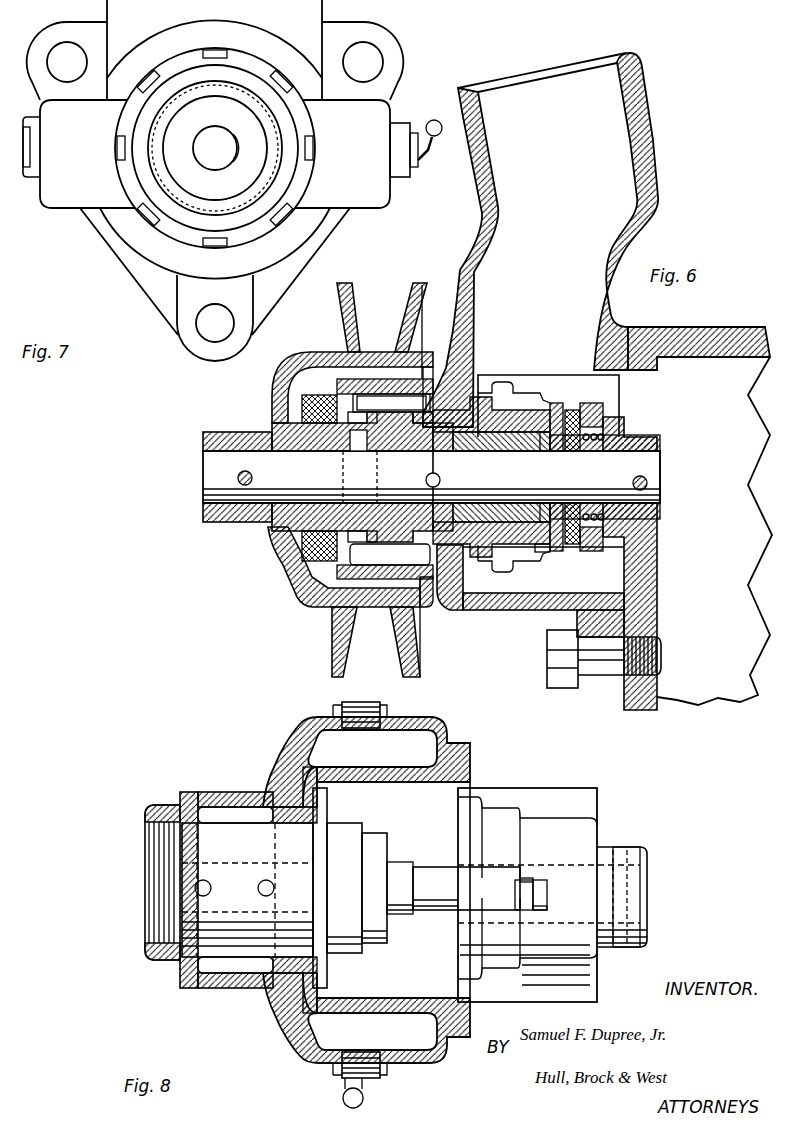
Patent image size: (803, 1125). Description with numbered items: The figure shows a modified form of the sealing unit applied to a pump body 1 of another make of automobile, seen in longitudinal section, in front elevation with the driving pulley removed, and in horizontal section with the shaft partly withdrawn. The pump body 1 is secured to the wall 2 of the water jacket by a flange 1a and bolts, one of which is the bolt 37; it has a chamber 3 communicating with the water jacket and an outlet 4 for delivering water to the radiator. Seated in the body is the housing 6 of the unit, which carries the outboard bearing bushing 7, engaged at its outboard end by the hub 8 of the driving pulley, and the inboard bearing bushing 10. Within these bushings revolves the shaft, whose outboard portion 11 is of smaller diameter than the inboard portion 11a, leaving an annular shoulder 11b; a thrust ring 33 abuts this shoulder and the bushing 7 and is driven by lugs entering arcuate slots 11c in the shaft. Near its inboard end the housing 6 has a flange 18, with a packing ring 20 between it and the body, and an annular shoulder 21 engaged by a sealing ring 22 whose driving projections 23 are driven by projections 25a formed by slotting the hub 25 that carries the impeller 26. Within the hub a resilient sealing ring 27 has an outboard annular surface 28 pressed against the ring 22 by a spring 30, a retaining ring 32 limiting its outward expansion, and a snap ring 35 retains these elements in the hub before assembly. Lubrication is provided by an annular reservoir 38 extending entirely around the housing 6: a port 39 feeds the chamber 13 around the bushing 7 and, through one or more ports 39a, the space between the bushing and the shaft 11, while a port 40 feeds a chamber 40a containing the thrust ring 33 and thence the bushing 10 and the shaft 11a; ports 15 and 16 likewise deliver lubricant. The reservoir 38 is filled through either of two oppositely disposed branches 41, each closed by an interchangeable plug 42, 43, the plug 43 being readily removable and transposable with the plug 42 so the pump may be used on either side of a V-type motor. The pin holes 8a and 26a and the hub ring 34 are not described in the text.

In FIG. 7, the pump body 1 is at (295, 230).
In FIG. 6, the flange 1a is at (600, 690).
In FIG. 8, the flange 1a is at (214, 792).
In FIG. 6, the wall of liquid containing chamber 2 is at (712, 327).
In FIG. 6, the chamber 3 is at (622, 560).
In FIG. 8, the chamber 3 is at (393, 890).
In FIG. 6, the outlet 4 is at (540, 240).
In FIG. 7, the housing 6 is at (190, 210).
In FIG. 6, the housing 6 is at (410, 545).
In FIG. 8, the housing 6 is at (212, 825).
In FIG. 7, the outboard bearing bushing 7 is at (177, 168).
In FIG. 6, the outboard bearing bushing 7 is at (290, 522).
In FIG. 6, the hub 8 is at (248, 432).
In FIG. 6, the pin hole 8a is at (238, 478).
In FIG. 6, the bearing bushing 10 is at (578, 477).
In FIG. 7, the shaft 11 is at (221, 158).
In FIG. 6, the shaft 11 is at (225, 505).
In FIG. 8, the shaft 11 is at (393, 862).
In FIG. 6, the inboard shaft portion 11a is at (652, 466).
In FIG. 8, the inboard shaft portion 11a is at (440, 915).
In FIG. 6, the annular shoulder 11b is at (437, 468).
In FIG. 8, the annular shoulder 11b is at (418, 896).
In FIG. 6, the arcuate slots 11c is at (443, 480).
In FIG. 6, the annular chamber 13 is at (385, 555).
In FIG. 8, the port 15 is at (206, 880).
In FIG. 8, the port 16 is at (264, 880).
In FIG. 6, the flange 18 is at (486, 393).
In FIG. 8, the flange 18 is at (327, 822).
In FIG. 6, the packing ring 20 is at (458, 602).
In FIG. 8, the packing ring 20 is at (313, 851).
In FIG. 6, the annular shoulder 21 is at (542, 455).
In FIG. 6, the sealing ring 22 is at (556, 450).
In FIG. 6, the driving projections 23 is at (562, 405).
In FIG. 8, the driving projections 23 is at (530, 878).
In FIG. 6, the hub 25 is at (605, 560).
In FIG. 8, the hub 25 is at (572, 958).
In FIG. 6, the projections 25a is at (510, 390).
In FIG. 8, the projections 25a is at (468, 861).
In FIG. 6, the rotor or impeller 26 is at (555, 375).
In FIG. 8, the rotor or impeller 26 is at (553, 790).
In FIG. 6, the pin hole 26a is at (650, 484).
In FIG. 8, the pin hole 26a is at (630, 850).
In FIG. 6, the sealing ring 27 is at (522, 477).
In FIG. 8, the outboard annular surface 28 is at (547, 889).
In FIG. 6, the spring 30 is at (592, 410).
In FIG. 6, the retaining ring 32 is at (572, 410).
In FIG. 8, the retaining ring 32 is at (547, 909).
In FIG. 6, the thrust ring 33 is at (427, 440).
In FIG. 7, the pulley hub ring 34 is at (250, 65).
In FIG. 6, the pulley hub ring 34 is at (313, 375).
In FIG. 8, the pulley hub ring 34 is at (145, 812).
In FIG. 6, the snap ring 35 is at (541, 553).
In FIG. 8, the snap ring 35 is at (515, 898).
In FIG. 6, the bolt 37 is at (547, 660).
In FIG. 6, the annular reservoir 38 is at (300, 400).
In FIG. 8, the annular reservoir 38 is at (228, 978).
In FIG. 6, the port 39 is at (362, 415).
In FIG. 6, the ports 39a is at (357, 448).
In FIG. 6, the port 40 is at (429, 405).
In FIG. 6, the chamber 40a is at (440, 565).
In FIG. 7, the branches 41 is at (215, 154).
In FIG. 8, the branches 41 is at (366, 890).
In FIG. 7, the plug 42 is at (35, 140).
In FIG. 8, the plug 42 is at (371, 702).
In FIG. 7, the plug 43 is at (422, 125).
In FIG. 8, the plug 43 is at (343, 1092).